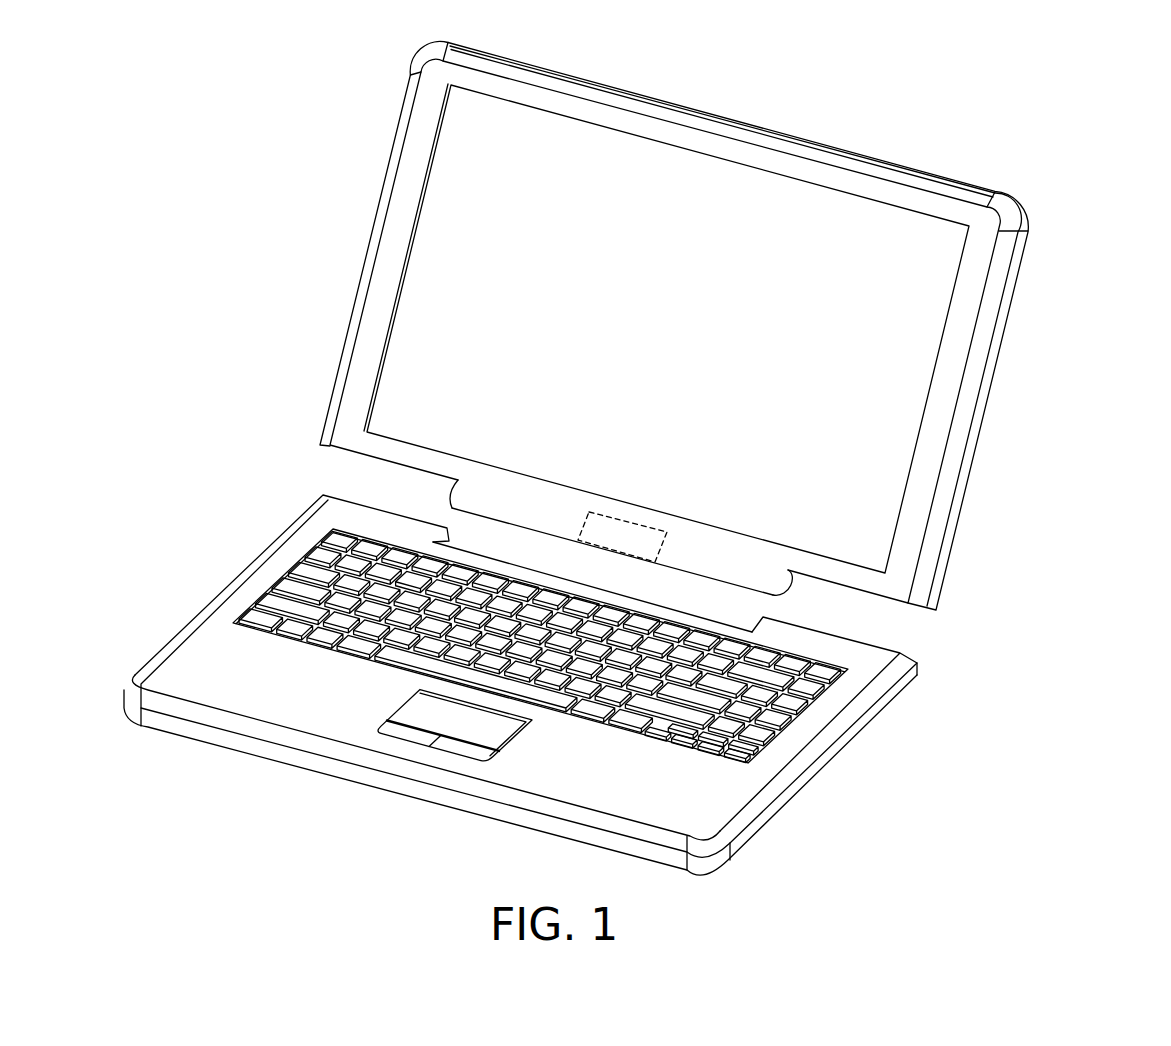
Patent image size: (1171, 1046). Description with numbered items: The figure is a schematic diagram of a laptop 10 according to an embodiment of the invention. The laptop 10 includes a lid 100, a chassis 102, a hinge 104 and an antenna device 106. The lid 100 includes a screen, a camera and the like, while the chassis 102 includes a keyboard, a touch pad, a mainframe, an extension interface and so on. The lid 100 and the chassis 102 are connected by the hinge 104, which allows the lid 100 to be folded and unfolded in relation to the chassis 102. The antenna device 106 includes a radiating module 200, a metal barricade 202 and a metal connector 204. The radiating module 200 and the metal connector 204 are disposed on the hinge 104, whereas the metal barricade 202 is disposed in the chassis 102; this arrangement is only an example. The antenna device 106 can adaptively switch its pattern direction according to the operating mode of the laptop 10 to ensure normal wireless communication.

The laptop 10 is at (990, 95).
The lid 100 is at (1058, 163).
The chassis 102 is at (1058, 625).
The hinge 104 is at (782, 583).
The antenna device 106 is at (405, 493).
The radiating module 200 is at (594, 512).
The metal barricade 202 is at (521, 558).
The metal connector 204 is at (637, 523).